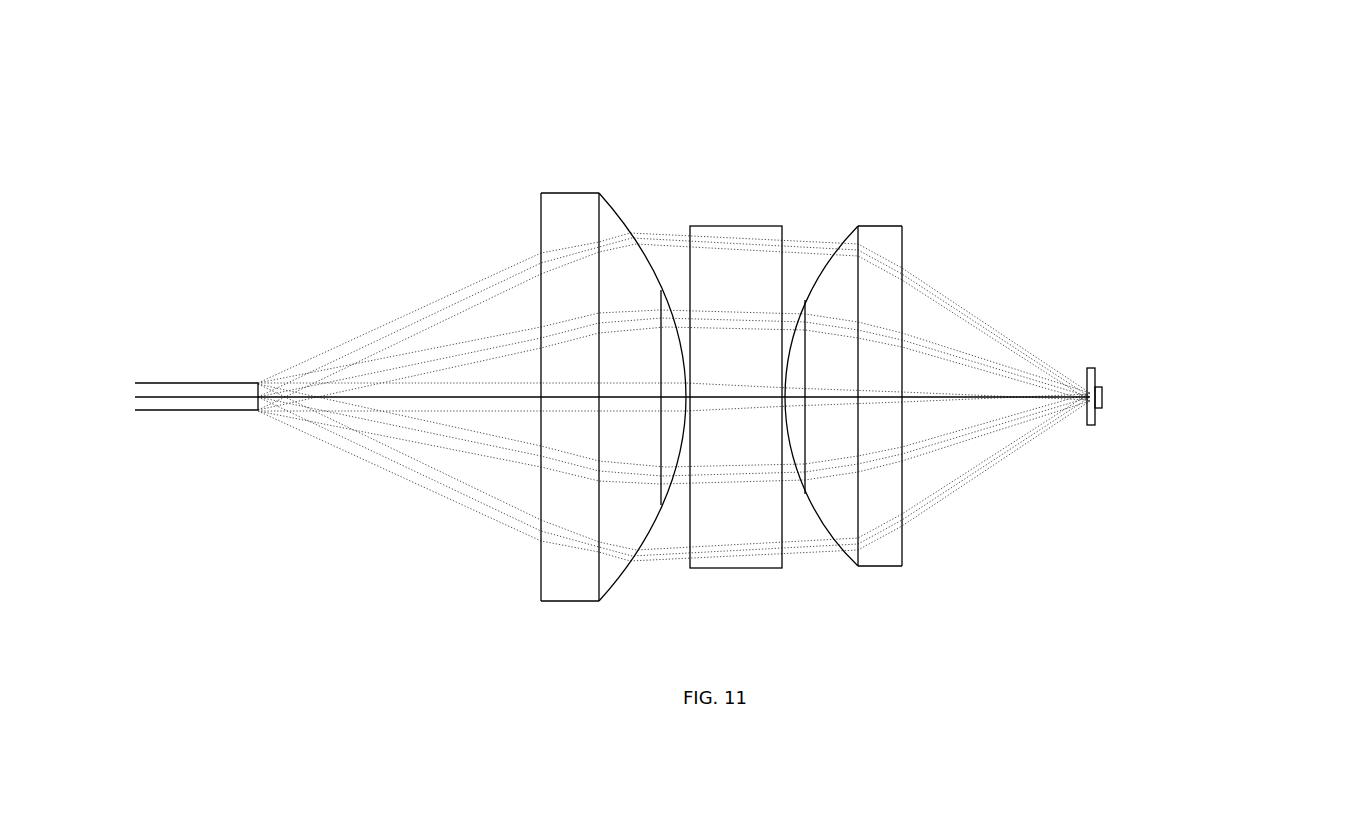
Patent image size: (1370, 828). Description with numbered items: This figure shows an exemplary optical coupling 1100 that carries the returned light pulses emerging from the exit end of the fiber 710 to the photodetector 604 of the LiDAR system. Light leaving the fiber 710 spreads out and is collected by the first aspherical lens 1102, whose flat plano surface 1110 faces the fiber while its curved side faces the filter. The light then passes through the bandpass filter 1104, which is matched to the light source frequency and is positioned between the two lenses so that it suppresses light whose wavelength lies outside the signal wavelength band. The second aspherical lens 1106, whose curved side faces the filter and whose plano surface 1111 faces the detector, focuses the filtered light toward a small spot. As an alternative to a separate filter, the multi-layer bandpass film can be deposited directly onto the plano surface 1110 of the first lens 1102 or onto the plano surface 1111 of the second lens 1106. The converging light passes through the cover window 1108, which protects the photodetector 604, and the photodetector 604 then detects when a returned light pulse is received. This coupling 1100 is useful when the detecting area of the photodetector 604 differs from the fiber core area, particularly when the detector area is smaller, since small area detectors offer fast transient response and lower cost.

The coupling 1100 is at (721, 339).
The fiber 710 is at (190, 383).
The aspherical lens 1102 is at (494, 378).
The plano surface 1110 is at (479, 359).
The bandpass filter 1104 is at (735, 226).
The aspherical lens 1106 is at (978, 379).
The plano surface 1111 is at (957, 346).
The cover window 1108 is at (1092, 368).
The photodetector 604 is at (1108, 398).